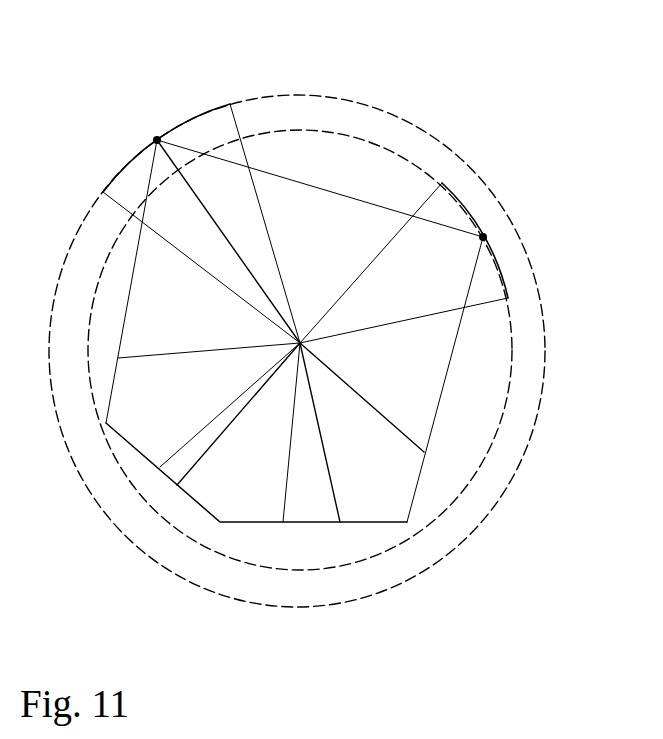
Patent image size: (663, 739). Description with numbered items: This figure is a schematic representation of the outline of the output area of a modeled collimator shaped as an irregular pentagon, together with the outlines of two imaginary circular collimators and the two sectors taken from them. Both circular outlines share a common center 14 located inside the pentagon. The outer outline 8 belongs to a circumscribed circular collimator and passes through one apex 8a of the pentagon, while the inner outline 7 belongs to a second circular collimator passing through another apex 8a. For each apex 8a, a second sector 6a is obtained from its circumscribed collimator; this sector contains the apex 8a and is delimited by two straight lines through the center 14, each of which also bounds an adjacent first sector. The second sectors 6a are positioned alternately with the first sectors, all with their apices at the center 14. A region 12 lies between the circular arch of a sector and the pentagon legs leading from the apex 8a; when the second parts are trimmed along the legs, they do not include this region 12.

The second sector 6a is at (450, 252).
The outline of first circular output area 7 is at (518, 387).
The outline of second circular output area 8 is at (502, 502).
The apex 8a is at (157, 140).
The region 12 is at (203, 137).
The center 14 is at (300, 337).